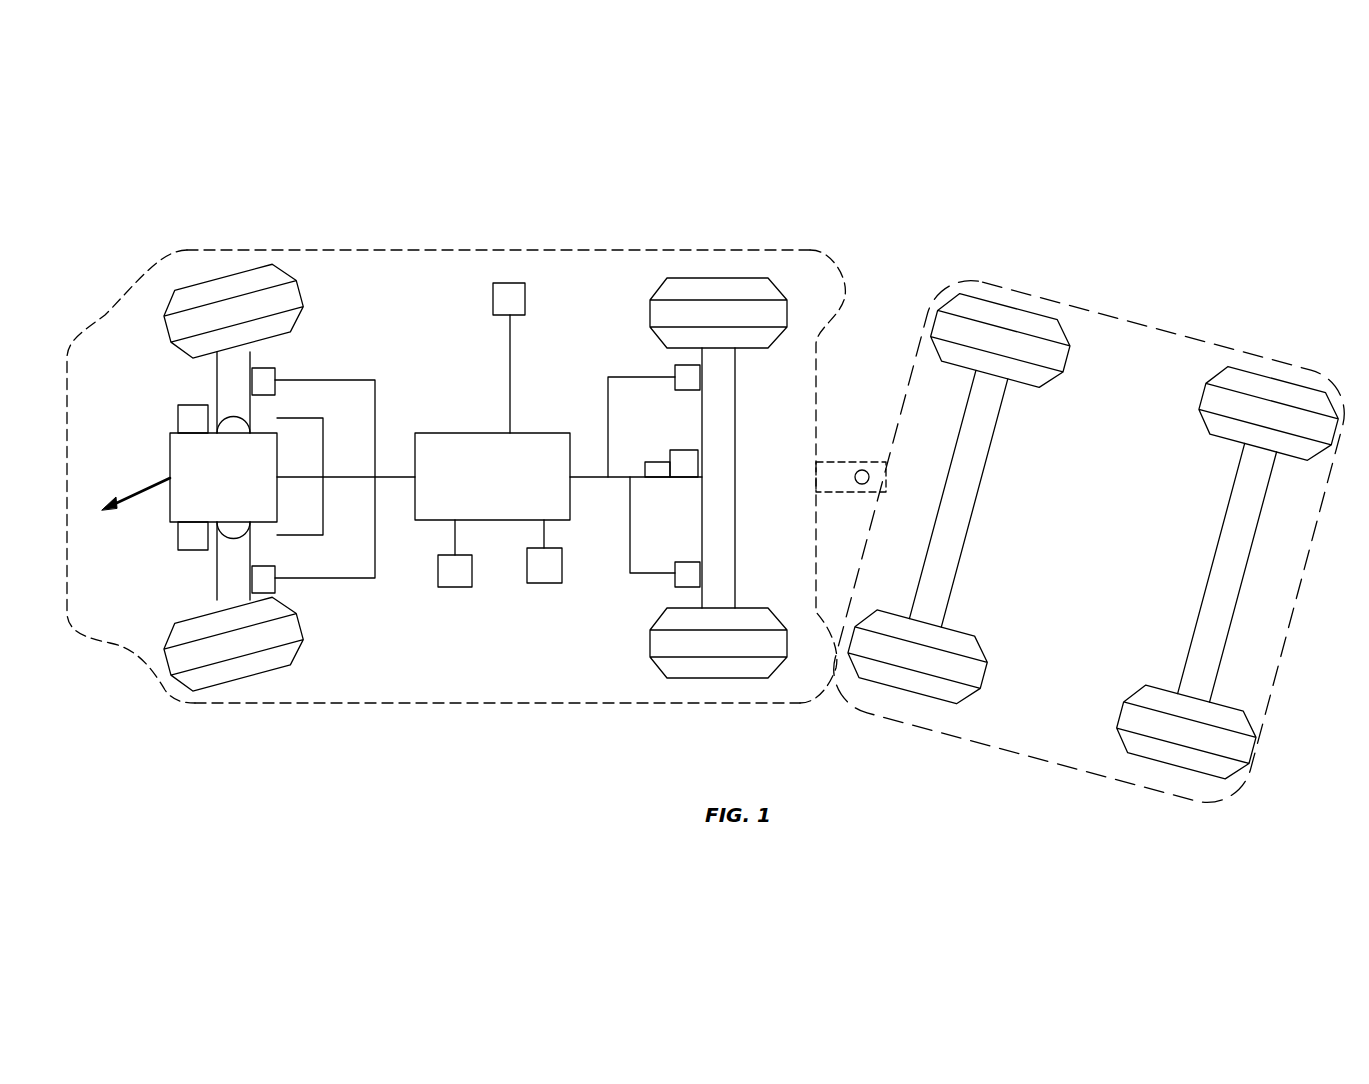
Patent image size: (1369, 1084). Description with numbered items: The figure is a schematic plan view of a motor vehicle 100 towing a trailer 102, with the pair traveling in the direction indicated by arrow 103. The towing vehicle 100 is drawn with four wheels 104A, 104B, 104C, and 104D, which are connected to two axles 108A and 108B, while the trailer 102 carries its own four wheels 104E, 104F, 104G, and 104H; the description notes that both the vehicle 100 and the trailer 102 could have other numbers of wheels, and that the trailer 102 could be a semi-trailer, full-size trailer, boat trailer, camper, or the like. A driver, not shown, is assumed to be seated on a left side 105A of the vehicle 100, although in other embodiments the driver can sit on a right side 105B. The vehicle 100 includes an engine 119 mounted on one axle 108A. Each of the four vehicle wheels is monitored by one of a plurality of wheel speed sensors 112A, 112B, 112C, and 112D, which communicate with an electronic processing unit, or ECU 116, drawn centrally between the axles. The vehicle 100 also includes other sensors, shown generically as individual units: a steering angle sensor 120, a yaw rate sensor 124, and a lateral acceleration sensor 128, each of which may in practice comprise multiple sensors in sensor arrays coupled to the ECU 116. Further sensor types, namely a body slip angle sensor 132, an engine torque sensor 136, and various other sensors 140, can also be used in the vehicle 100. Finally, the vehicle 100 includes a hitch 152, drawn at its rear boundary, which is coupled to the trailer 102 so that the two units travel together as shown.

The motor vehicle 100 is at (493, 248).
The trailer 102 is at (1170, 325).
The arrow 103 is at (145, 484).
The wheel 104A is at (302, 290).
The wheel 104B is at (730, 276).
The wheel 104C is at (230, 680).
The wheel 104D is at (727, 682).
The wheel 104E is at (1047, 388).
The wheel 104F is at (1207, 433).
The wheel 104G is at (1145, 687).
The wheel 104H is at (978, 638).
The left side 105A is at (445, 705).
The right side 105B is at (430, 248).
The axle 108A is at (216, 567).
The axle 108B is at (737, 477).
The wheel speed sensor 112A is at (262, 368).
The wheel speed sensor 112B is at (686, 365).
The wheel speed sensor 112C is at (275, 594).
The wheel speed sensor 112D is at (677, 587).
The electronic processing unit 116 is at (488, 433).
The engine 119 is at (170, 447).
The steering angle sensor 120 is at (177, 407).
The yaw rate sensor 124 is at (520, 283).
The lateral acceleration sensor 128 is at (545, 584).
The body slip angle sensor 132 is at (470, 588).
The engine torque sensor 136 is at (178, 538).
The other sensors 140 is at (683, 448).
The hitch 152 is at (848, 473).